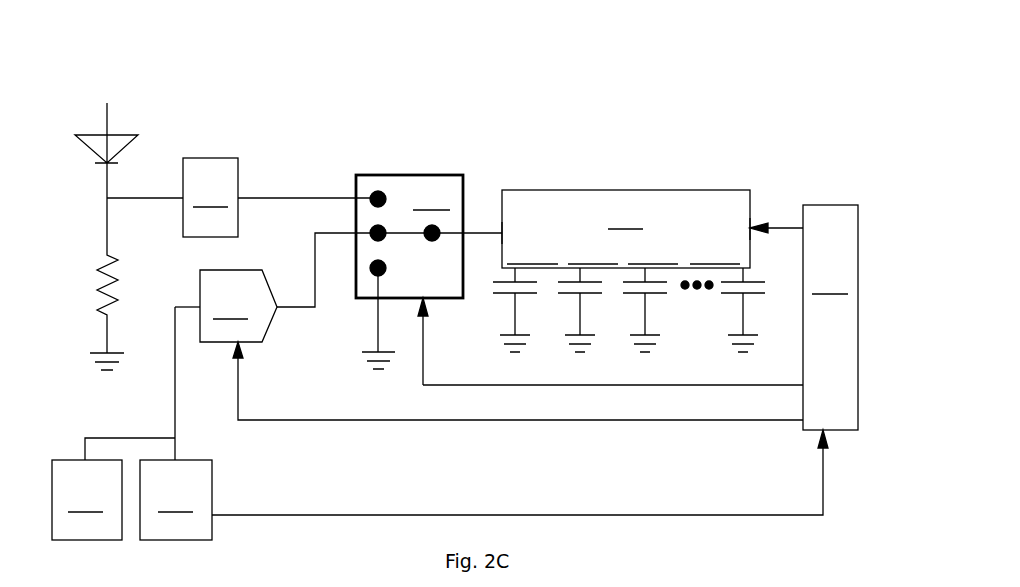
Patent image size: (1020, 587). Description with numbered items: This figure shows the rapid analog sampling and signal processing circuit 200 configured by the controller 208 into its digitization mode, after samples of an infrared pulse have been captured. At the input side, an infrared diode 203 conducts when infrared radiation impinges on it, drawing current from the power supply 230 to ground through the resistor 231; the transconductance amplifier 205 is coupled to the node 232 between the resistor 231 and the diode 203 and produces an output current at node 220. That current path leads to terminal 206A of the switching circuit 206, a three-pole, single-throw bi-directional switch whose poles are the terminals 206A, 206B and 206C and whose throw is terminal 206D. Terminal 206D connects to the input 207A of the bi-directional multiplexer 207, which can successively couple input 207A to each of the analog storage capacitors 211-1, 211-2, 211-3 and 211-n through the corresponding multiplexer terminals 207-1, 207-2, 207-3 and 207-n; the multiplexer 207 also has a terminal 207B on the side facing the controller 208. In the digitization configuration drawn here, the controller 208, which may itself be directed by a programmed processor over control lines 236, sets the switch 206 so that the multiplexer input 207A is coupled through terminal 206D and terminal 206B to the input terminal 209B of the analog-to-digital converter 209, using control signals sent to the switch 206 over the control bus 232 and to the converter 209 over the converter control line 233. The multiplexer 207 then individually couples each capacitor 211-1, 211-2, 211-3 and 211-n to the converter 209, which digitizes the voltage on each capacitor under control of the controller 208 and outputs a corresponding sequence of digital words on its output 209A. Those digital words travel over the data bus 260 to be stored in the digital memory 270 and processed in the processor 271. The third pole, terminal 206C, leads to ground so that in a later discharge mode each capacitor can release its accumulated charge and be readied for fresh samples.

The rapid analog sampling and signal processing circuit 200 is at (256, 44).
The infrared diode 203 is at (78, 142).
The transconductance amplifier 205 is at (210, 197).
The switching circuit 206 is at (377, 252).
The switch terminal 206A is at (347, 192).
The switch terminal 206B is at (352, 228).
The switch terminal 206C is at (370, 308).
The switch terminal 206D is at (470, 227).
The bi-directional multiplexer 207 is at (627, 200).
The multiplexer terminal 207-1 is at (534, 254).
The multiplexer terminal 207-2 is at (595, 254).
The multiplexer terminal 207-3 is at (655, 254).
The multiplexer terminal 207-n is at (717, 254).
The multiplexer input 207A is at (494, 230).
The capacitor bank control input 207B is at (757, 220).
The controller 208 is at (830, 317).
The analog-to-digital converter 209 is at (244, 322).
The converter output 209A is at (187, 295).
The converter input terminal 209B is at (280, 312).
The capacitor 211-1 is at (496, 310).
The capacitor 211-2 is at (561, 310).
The capacitor 211-3 is at (626, 310).
The capacitor 211-n is at (724, 310).
The node 220 is at (268, 193).
The power supply 230 is at (101, 103).
The resistor 231 is at (792, 228).
The node / control bus 232 is at (115, 194).
The converter control line 233 is at (373, 430).
The control lines 236 is at (620, 507).
The data bus 260 is at (130, 383).
The digital memory 270 is at (176, 500).
The processor 271 is at (87, 500).